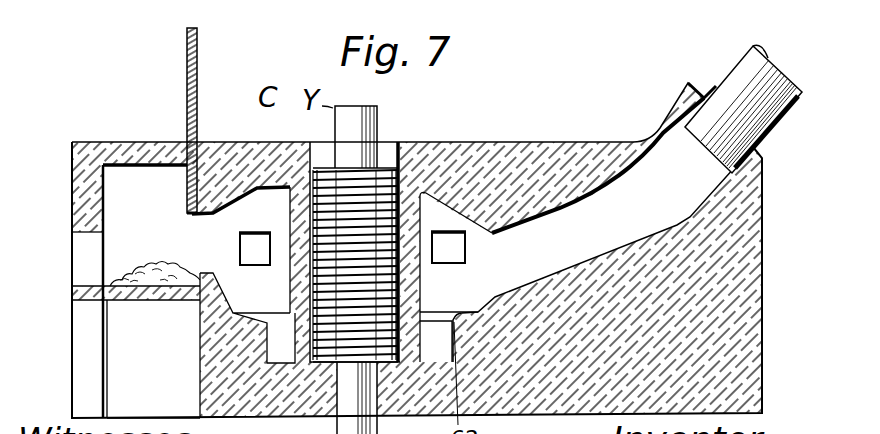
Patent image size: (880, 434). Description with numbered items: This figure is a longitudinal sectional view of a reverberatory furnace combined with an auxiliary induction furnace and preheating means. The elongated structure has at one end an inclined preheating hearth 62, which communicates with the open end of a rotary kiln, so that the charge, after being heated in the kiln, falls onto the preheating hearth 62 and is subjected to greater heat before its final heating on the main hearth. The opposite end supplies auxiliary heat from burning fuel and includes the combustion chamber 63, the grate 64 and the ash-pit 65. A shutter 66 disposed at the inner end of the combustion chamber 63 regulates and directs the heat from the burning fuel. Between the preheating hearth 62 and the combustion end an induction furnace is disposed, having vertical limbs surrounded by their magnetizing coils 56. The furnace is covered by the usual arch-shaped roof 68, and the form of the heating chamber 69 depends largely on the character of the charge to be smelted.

The magnetizing coil 56 is at (390, 167).
The inclined preheating hearth 62 is at (677, 228).
The combustion chamber 63 is at (130, 177).
The grate 64 is at (132, 300).
The ash-pit 65 is at (153, 359).
The shutter 66 is at (197, 45).
The arch-shaped roof 68 is at (233, 200).
The heating chamber 69 is at (245, 250).